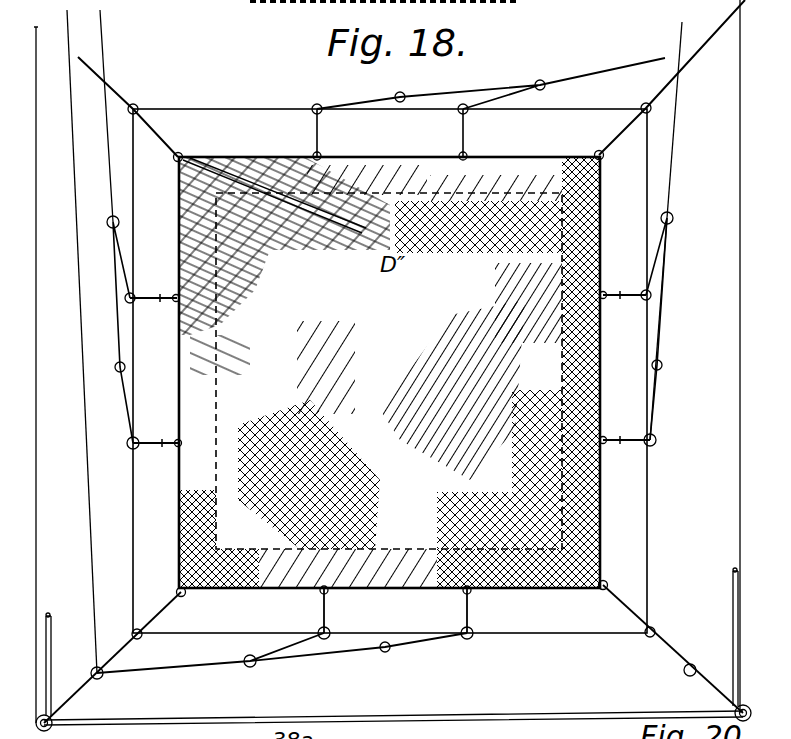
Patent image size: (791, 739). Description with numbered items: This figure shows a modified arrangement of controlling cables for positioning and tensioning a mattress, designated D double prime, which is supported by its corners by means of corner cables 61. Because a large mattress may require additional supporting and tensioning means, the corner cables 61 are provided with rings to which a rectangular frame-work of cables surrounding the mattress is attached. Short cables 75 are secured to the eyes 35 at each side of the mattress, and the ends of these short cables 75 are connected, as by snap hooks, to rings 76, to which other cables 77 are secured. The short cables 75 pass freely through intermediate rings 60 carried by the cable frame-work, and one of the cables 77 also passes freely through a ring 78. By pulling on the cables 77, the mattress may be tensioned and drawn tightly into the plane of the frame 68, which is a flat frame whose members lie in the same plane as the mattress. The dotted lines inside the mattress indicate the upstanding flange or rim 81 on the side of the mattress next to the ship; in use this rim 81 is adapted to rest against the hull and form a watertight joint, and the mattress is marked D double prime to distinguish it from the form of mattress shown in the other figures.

The eyes 35 is at (321, 152).
The rings 60 is at (129, 448).
The corner cables 61 is at (37, 470).
The frame 68 is at (403, 718).
The short cables 75 is at (157, 302).
The rings 76 is at (109, 227).
The cables 77 is at (106, 80).
The ring 78 is at (99, 681).
The upstanding flange or rim 81 is at (203, 373).